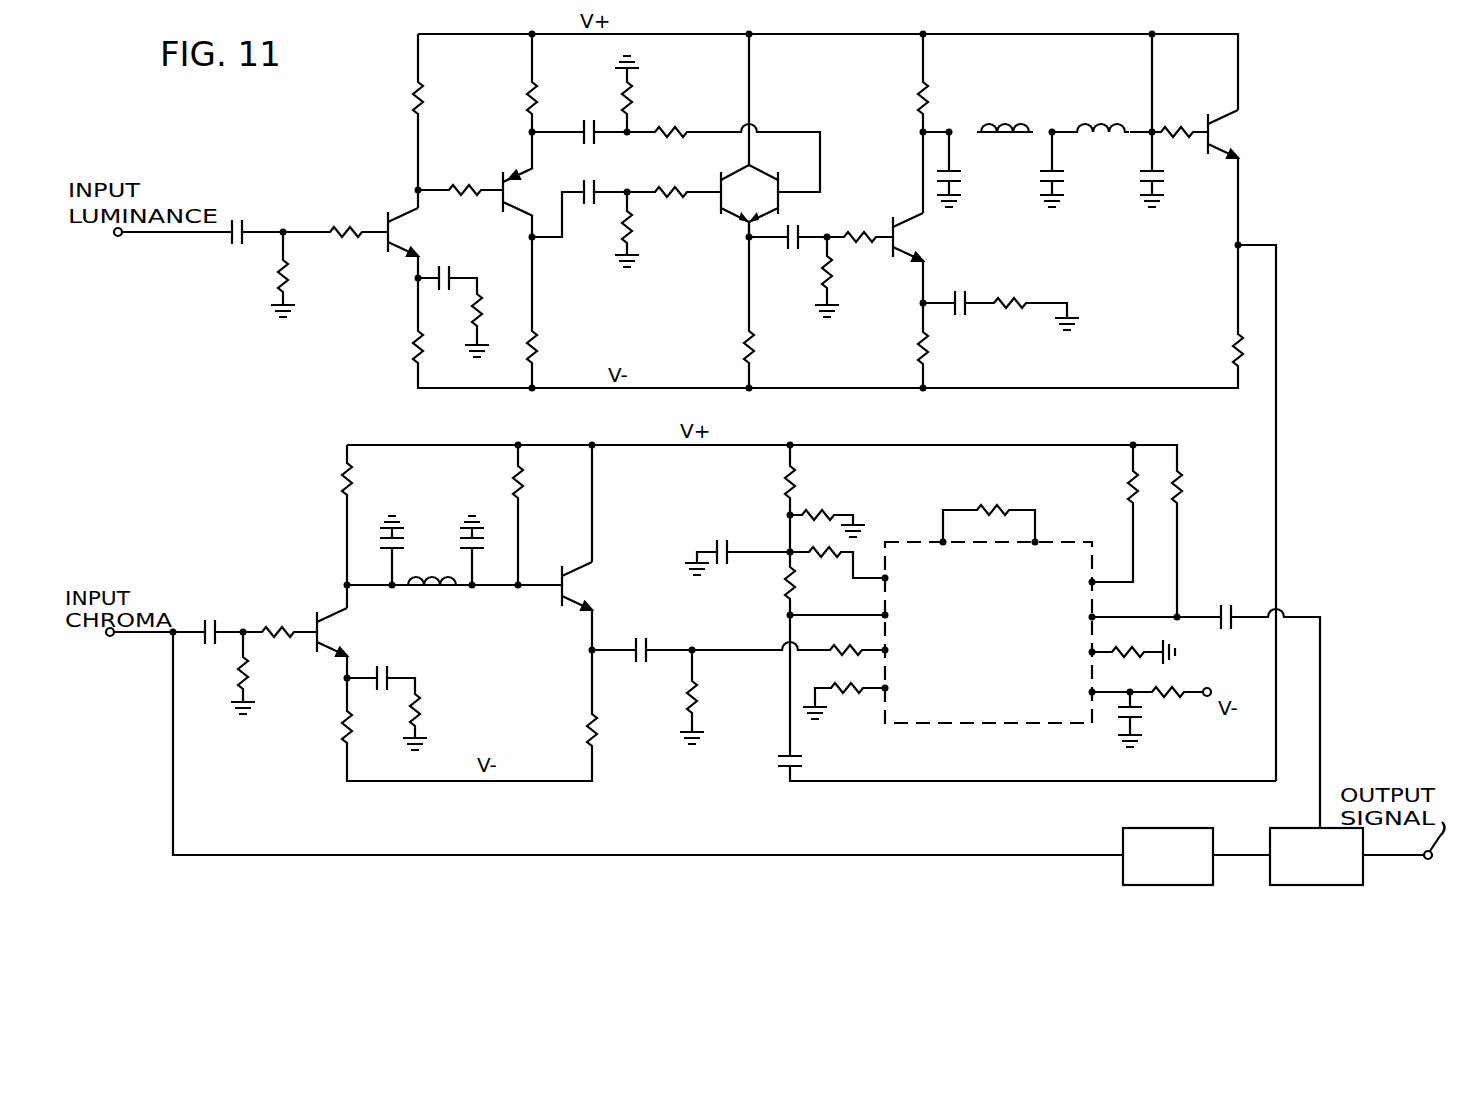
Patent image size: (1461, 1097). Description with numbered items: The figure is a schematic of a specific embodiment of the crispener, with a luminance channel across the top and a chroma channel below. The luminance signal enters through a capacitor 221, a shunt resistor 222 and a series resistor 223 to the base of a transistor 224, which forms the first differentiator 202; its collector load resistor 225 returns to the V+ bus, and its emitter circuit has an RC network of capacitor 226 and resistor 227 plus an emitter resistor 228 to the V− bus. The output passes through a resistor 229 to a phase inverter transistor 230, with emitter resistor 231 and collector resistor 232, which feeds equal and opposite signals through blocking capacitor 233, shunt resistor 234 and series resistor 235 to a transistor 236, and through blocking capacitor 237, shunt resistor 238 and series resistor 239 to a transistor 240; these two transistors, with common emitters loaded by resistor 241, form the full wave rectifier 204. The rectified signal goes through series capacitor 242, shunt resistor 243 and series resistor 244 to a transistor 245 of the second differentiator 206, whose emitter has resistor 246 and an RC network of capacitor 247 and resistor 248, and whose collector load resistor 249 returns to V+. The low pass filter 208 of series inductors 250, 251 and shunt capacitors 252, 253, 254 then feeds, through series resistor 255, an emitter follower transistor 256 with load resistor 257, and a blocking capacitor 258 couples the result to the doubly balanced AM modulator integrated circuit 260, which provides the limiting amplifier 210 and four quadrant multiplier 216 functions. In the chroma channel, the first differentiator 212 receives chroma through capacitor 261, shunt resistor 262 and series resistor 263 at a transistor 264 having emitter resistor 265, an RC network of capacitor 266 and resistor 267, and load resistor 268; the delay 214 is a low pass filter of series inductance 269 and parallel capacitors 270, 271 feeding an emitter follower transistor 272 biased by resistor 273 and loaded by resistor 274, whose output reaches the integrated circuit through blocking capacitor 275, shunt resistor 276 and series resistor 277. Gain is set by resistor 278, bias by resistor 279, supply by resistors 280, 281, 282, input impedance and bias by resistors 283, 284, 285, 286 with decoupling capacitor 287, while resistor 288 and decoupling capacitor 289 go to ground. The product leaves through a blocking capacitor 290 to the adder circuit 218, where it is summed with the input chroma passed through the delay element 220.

The first differentiator 202 is at (372, 312).
The full wave rectifier 204 is at (785, 115).
The second differentiator 206 is at (900, 188).
The low pass filter 208 is at (1068, 120).
The limiting amplifier 210 is at (1002, 609).
The first differentiator 212 is at (297, 577).
The delay 214 is at (425, 503).
The four quadrant multiplier 216 is at (1002, 637).
The adder circuit 218 is at (1270, 872).
The delay element 220 is at (1122, 870).
The capacitor 221 is at (240, 219).
The shunt resistor 222 is at (293, 285).
The series resistor 223 is at (330, 230).
The transistor 224 is at (393, 248).
The load resistor 225 is at (422, 82).
The capacitor 226 is at (450, 276).
The resistor 227 is at (466, 318).
The emitter resistor 228 is at (414, 348).
The resistor 229 is at (481, 183).
The transistor 230 is at (515, 211).
The emitter resistor 231 is at (523, 92).
The collector resistor 232 is at (543, 337).
The blocking capacitor 233 is at (604, 122).
The shunt resistor 234 is at (635, 100).
The series resistor 235 is at (664, 126).
The transistor 236 is at (762, 174).
The blocking capacitor 237 is at (600, 184).
The shunt resistor 238 is at (622, 236).
The series resistor 239 is at (670, 183).
The transistor 240 is at (734, 212).
The load resistor 241 is at (737, 346).
The series capacitor 242 is at (799, 250).
The shunt resistor 243 is at (818, 282).
The series resistor 244 is at (845, 248).
The transistor 245 is at (890, 224).
The resistor 246 is at (918, 346).
The capacitor 247 is at (961, 318).
The resistor 248 is at (1000, 302).
The load resistor 249 is at (917, 104).
The series inductor 250 is at (990, 136).
The series inductor 251 is at (1126, 135).
The shunt capacitor 252 is at (963, 188).
The shunt capacitor 253 is at (1061, 188).
The shunt capacitor 254 is at (1163, 188).
The series resistor 255 is at (1160, 127).
The transistor 256 is at (1208, 152).
The load resistor 257 is at (1230, 348).
The blocking capacitor 258 is at (780, 764).
The doubly balanced AM modulator integrated circuit 260 is at (1058, 544).
The capacitor 261 is at (194, 622).
The shunt resistor 262 is at (238, 682).
The series resistor 263 is at (260, 640).
The transistor 264 is at (329, 612).
The resistor 265 is at (339, 721).
The capacitor 266 is at (380, 672).
The resistor 267 is at (420, 713).
The load resistor 268 is at (340, 479).
The series inductance 269 is at (426, 594).
The capacitor 270 is at (404, 542).
The capacitor 271 is at (464, 557).
The transistor 272 is at (568, 612).
The resistor 273 is at (523, 477).
The load resistor 274 is at (588, 716).
The blocking capacitor 275 is at (663, 625).
The shunt resistor 276 is at (686, 696).
The series resistor 277 is at (856, 646).
The resistor 278 is at (979, 506).
The resistor 279 is at (1152, 649).
The resistor 280 is at (1175, 690).
The resistor 281 is at (1127, 486).
The resistor 282 is at (1183, 488).
The resistor 283 is at (784, 477).
The resistor 284 is at (812, 511).
The resistor 285 is at (803, 562).
The resistor 286 is at (785, 590).
The capacitor 287 is at (716, 544).
The resistor 288 is at (844, 698).
The decoupling capacitor 289 is at (1146, 720).
The blocking capacitor 290 is at (1209, 617).